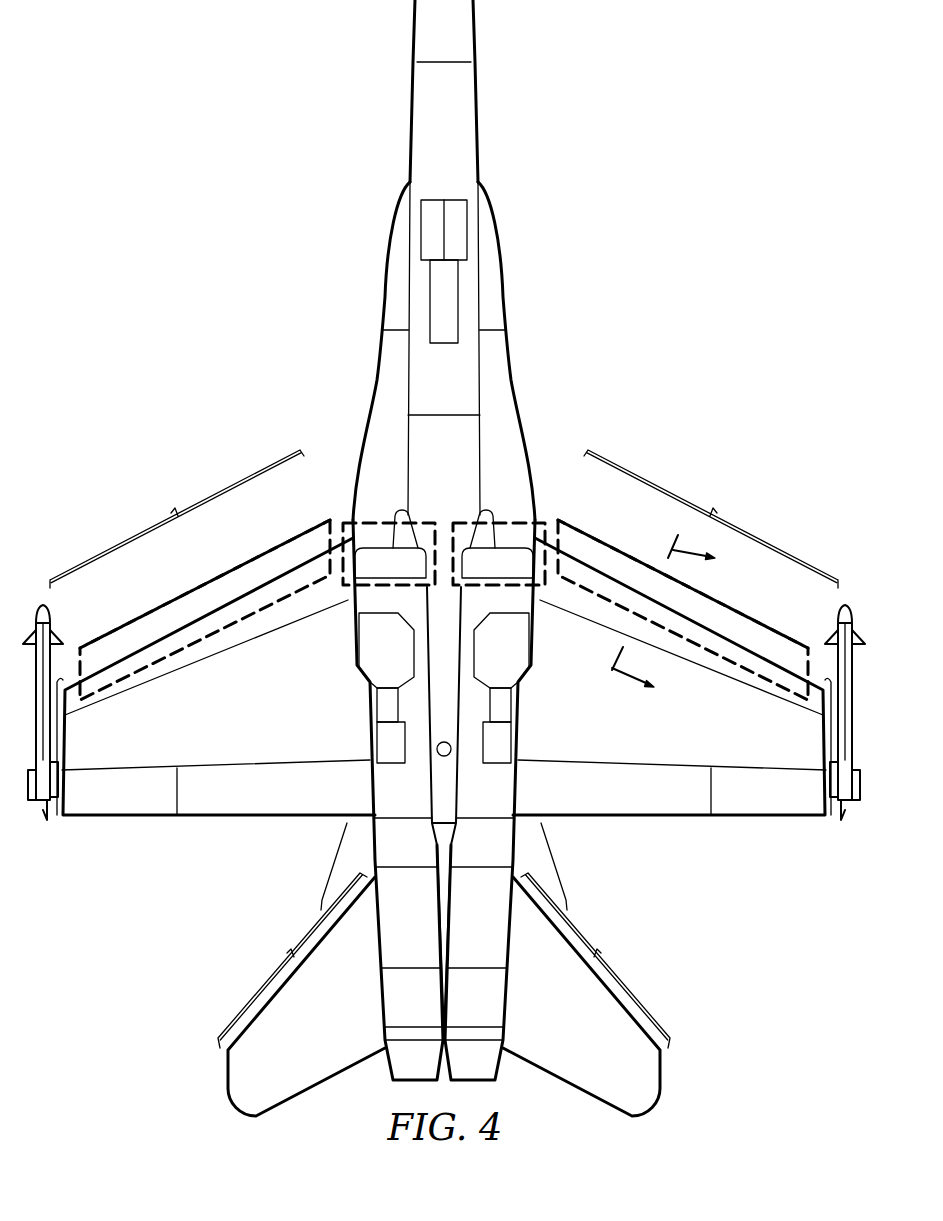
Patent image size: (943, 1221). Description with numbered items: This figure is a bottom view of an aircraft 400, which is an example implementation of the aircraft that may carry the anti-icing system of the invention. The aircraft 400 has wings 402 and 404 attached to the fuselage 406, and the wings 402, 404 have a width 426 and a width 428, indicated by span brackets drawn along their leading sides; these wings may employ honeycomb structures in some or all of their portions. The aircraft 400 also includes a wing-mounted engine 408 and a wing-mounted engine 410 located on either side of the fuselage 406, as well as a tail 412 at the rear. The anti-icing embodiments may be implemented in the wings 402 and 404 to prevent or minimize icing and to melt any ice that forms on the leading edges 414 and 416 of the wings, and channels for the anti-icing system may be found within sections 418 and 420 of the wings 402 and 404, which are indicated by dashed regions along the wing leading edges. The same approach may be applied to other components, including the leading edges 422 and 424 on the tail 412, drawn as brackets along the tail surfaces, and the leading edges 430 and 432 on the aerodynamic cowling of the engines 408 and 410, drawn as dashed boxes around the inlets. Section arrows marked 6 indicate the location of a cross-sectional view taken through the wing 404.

The aircraft 400 is at (721, 242).
The wing 402 is at (213, 829).
The wing 404 is at (675, 829).
The fuselage 406 is at (410, 135).
The wing-mounted engine 408 is at (390, 598).
The wing-mounted engine 410 is at (498, 598).
The tail 412 is at (228, 1085).
The leading edge 414 is at (158, 660).
The leading edge 416 is at (737, 640).
The section 418 is at (200, 585).
The section 420 is at (623, 553).
The leading edge 422 is at (292, 960).
The leading edge 424 is at (586, 969).
The width 426 is at (177, 519).
The width 428 is at (711, 519).
The leading edge 430 is at (388, 517).
The leading edge 432 is at (500, 517).
The section line 6- 6 is at (673, 622).